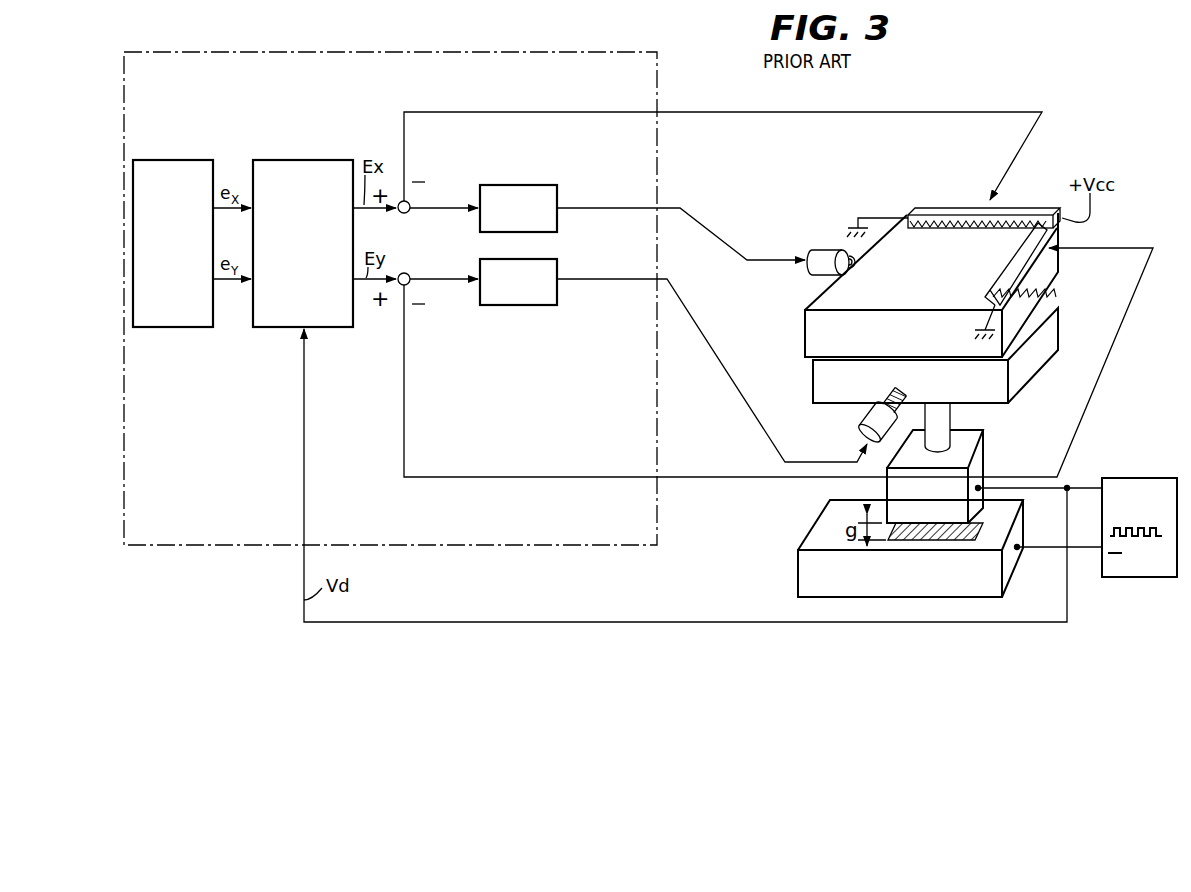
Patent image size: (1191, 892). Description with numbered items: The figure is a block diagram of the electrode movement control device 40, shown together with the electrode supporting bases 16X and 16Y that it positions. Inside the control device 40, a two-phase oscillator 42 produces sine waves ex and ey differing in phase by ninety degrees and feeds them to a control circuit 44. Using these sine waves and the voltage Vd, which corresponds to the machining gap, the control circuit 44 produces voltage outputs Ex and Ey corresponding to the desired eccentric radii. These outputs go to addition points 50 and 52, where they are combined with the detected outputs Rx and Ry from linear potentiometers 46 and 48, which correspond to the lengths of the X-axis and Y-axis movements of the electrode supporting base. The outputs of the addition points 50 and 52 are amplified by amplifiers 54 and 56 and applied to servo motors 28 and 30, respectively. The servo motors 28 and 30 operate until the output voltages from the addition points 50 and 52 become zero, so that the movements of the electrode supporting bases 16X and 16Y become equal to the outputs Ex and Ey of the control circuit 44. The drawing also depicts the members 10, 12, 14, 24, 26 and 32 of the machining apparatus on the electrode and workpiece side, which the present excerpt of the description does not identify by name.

The movable member / electrode holder 10 is at (984, 457).
The base plate / table 12 is at (804, 571).
The workpiece 14 is at (946, 540).
The electrode supporting base 16X is at (1048, 260).
The electrode supporting base 16Y is at (1043, 331).
The probe tip 24 is at (853, 267).
The shaft 26 is at (903, 383).
The servo motor 28 is at (823, 250).
The servo motor 30 is at (867, 416).
The pulse power source 32 is at (1142, 478).
The electrode movement control device 40 is at (657, 62).
The two-phase oscillator 42 is at (178, 160).
The control circuit 44 is at (300, 160).
The linear potentiometer 46 is at (938, 211).
The linear potentiometer 48 is at (1003, 268).
The addition point 50 is at (409, 203).
The addition point 52 is at (410, 282).
The amplifier 54 is at (523, 185).
The amplifier 56 is at (513, 305).